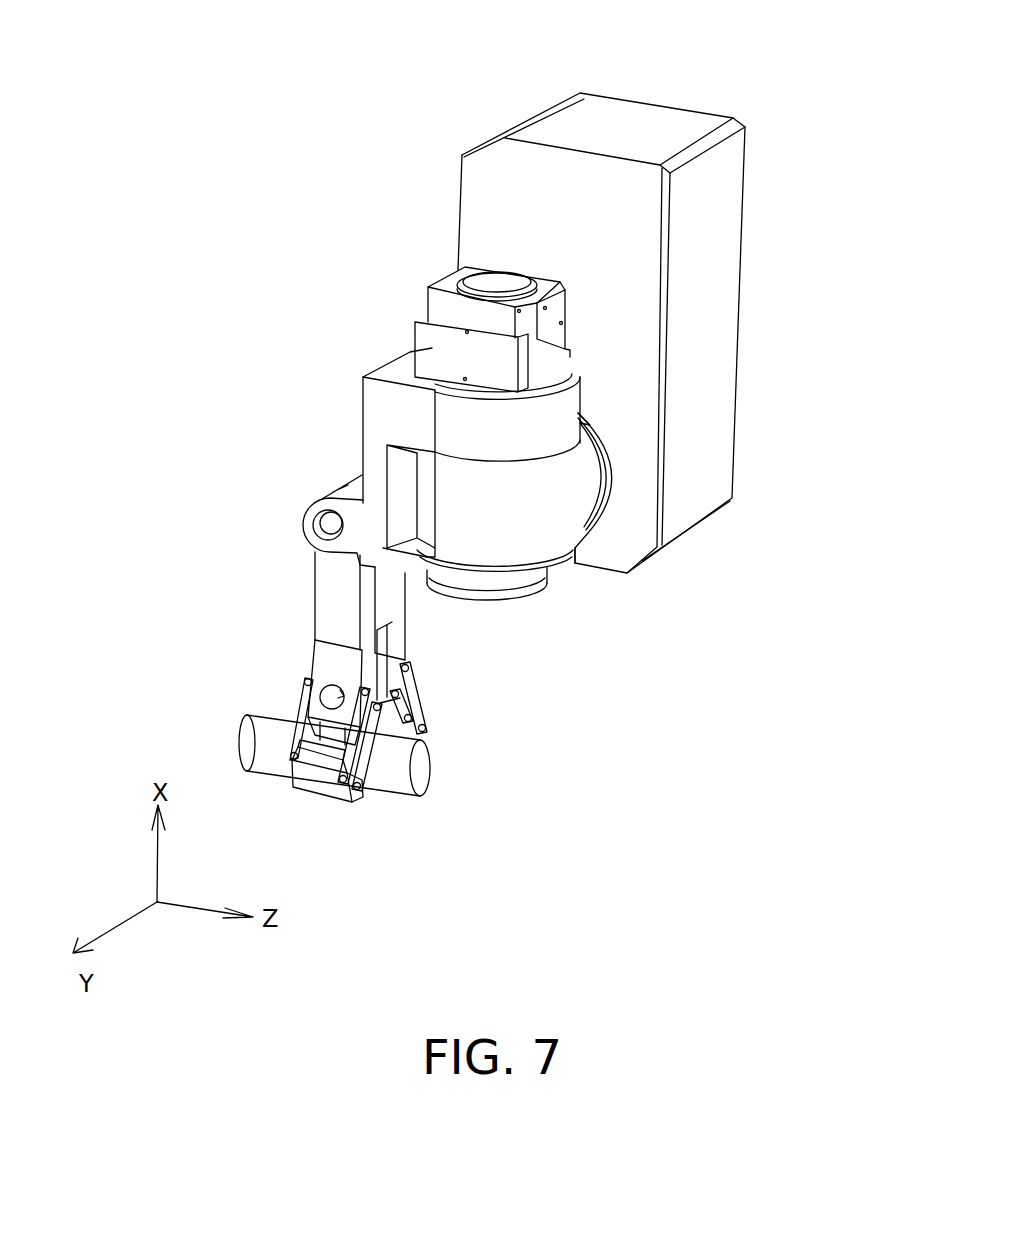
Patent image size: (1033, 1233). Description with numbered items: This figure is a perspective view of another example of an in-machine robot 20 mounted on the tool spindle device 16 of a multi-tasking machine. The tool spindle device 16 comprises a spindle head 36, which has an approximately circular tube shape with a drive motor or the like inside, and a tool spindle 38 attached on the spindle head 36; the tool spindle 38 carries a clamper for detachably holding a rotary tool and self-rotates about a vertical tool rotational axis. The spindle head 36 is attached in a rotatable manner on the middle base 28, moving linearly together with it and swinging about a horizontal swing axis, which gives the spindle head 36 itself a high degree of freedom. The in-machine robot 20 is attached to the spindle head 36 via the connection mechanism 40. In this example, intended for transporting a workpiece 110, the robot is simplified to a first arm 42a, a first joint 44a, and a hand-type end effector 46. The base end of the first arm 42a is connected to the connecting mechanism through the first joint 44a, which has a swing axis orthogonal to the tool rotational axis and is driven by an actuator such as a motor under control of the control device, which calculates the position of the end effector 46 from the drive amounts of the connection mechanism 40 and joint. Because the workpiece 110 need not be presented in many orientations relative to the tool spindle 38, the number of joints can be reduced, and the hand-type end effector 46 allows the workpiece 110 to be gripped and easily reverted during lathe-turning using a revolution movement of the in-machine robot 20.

The tool spindle device 16 is at (476, 456).
The in-machine robot 20 is at (308, 684).
The middle base 28 is at (625, 113).
The spindle head 36 is at (550, 498).
The tool spindle 38 is at (540, 588).
The connection mechanism 40 is at (547, 418).
The first arm 42a is at (320, 625).
The first joint 44a is at (322, 528).
The end effector 46 is at (298, 797).
The workpiece 110 is at (420, 792).